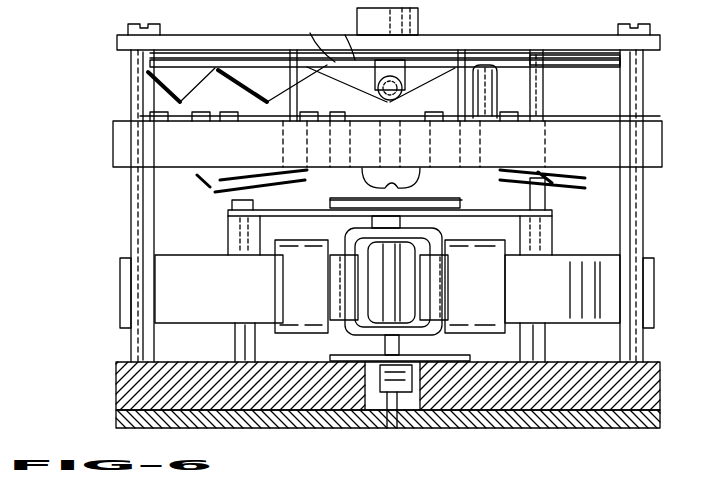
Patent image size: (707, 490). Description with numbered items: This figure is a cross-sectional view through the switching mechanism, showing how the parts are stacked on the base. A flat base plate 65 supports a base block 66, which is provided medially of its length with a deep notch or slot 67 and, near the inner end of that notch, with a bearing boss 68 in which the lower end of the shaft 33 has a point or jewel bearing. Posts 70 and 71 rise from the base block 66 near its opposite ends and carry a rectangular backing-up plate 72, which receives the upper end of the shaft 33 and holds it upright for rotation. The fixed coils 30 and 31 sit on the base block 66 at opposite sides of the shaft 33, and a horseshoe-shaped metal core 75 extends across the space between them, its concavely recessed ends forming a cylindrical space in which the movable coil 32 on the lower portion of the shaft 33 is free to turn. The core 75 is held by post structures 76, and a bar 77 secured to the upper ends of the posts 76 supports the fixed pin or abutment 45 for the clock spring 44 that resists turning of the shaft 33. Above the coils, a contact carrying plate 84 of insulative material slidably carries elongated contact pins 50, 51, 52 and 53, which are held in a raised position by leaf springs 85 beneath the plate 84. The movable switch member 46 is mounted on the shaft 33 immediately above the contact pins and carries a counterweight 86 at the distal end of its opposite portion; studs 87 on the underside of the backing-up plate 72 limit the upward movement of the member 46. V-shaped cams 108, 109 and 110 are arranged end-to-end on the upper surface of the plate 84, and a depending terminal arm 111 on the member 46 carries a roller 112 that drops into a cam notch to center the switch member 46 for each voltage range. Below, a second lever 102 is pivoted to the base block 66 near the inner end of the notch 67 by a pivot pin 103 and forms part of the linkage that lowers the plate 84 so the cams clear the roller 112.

The fixed coil 30 is at (500, 328).
The fixed coil 31 is at (300, 330).
The movable coil 32 is at (345, 333).
The shaft 33 is at (372, 229).
The clock spring 44 is at (330, 200).
The fixed pin or abutment 45 is at (465, 202).
The movable switch member 46 is at (572, 52).
The contact pin 50 is at (493, 82).
The contact pin 51 is at (493, 106).
The contact pin 52 is at (310, 33).
The contact pin 53 is at (290, 74).
The base plate 65 is at (116, 420).
The base block 66 is at (116, 390).
The notch or slot 67 is at (375, 428).
The bearing boss 68 is at (430, 352).
The post 70 is at (622, 226).
The post 71 is at (131, 233).
The backing-up plate 72 is at (522, 38).
The metal core 75 is at (208, 260).
The post structures 76 is at (233, 338).
The bar 77 is at (302, 218).
The contact carrying plate 84 is at (120, 150).
The leaf springs 85 is at (225, 190).
The counterweight 86 is at (418, 6).
The studs 87 is at (472, 50).
The second lever 102 is at (412, 400).
The pivot pin 103 is at (393, 410).
The V-shaped cam 108 is at (432, 118).
The V-shaped cam 109 is at (272, 112).
The V-shaped cam 110 is at (190, 118).
The terminal arm 111 is at (343, 37).
The roller 112 is at (420, 95).